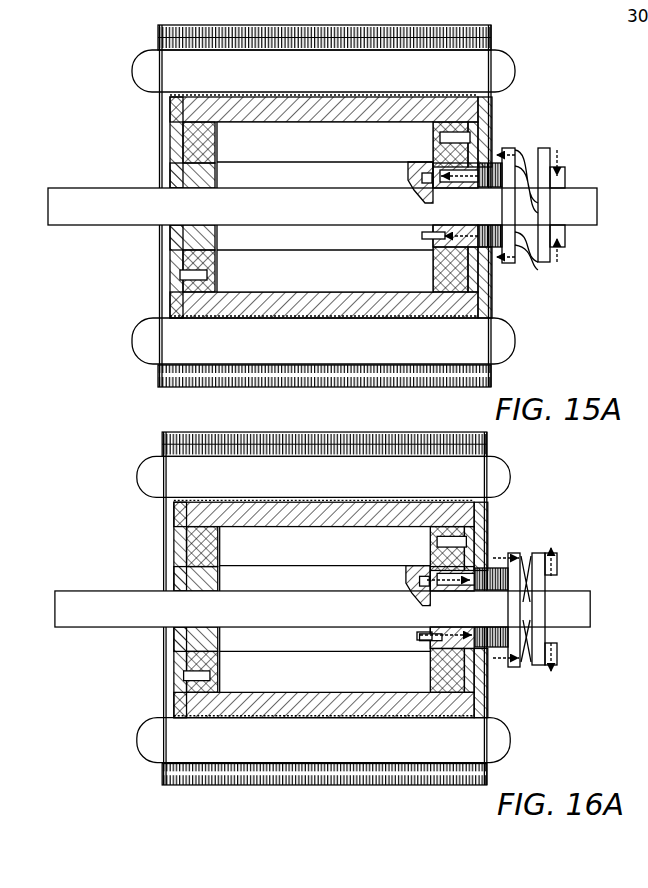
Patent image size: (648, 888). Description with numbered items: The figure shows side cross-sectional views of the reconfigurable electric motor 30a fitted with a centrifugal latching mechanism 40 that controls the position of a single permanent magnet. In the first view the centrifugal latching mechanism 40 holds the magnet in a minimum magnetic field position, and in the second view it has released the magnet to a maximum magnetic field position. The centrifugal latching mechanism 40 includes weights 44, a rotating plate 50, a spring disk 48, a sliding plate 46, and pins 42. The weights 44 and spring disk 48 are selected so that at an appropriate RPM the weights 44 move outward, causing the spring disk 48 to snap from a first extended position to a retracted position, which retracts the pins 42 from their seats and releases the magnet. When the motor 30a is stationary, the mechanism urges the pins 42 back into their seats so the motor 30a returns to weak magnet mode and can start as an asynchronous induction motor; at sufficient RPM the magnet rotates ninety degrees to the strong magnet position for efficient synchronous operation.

In FIG. 15A, the motor 30a is at (97, 79).
In FIG. 16A, the motor 30a is at (126, 503).
In FIG. 15A, the centrifugal latching mechanism 40 is at (533, 308).
In FIG. 16A, the centrifugal latching mechanism 40 is at (529, 723).
In FIG. 15A, the pins 42 is at (473, 169).
In FIG. 16A, the pins 42 is at (478, 548).
In FIG. 15A, the weights 44 is at (554, 166).
In FIG. 16A, the weights 44 is at (554, 562).
In FIG. 15A, the sliding plate 46 is at (516, 157).
In FIG. 16A, the sliding plate 46 is at (516, 562).
In FIG. 15A, the spring disk 48 is at (527, 253).
In FIG. 16A, the spring disk 48 is at (527, 664).
In FIG. 15A, the rotating plate 50 is at (544, 258).
In FIG. 16A, the rotating plate 50 is at (541, 668).